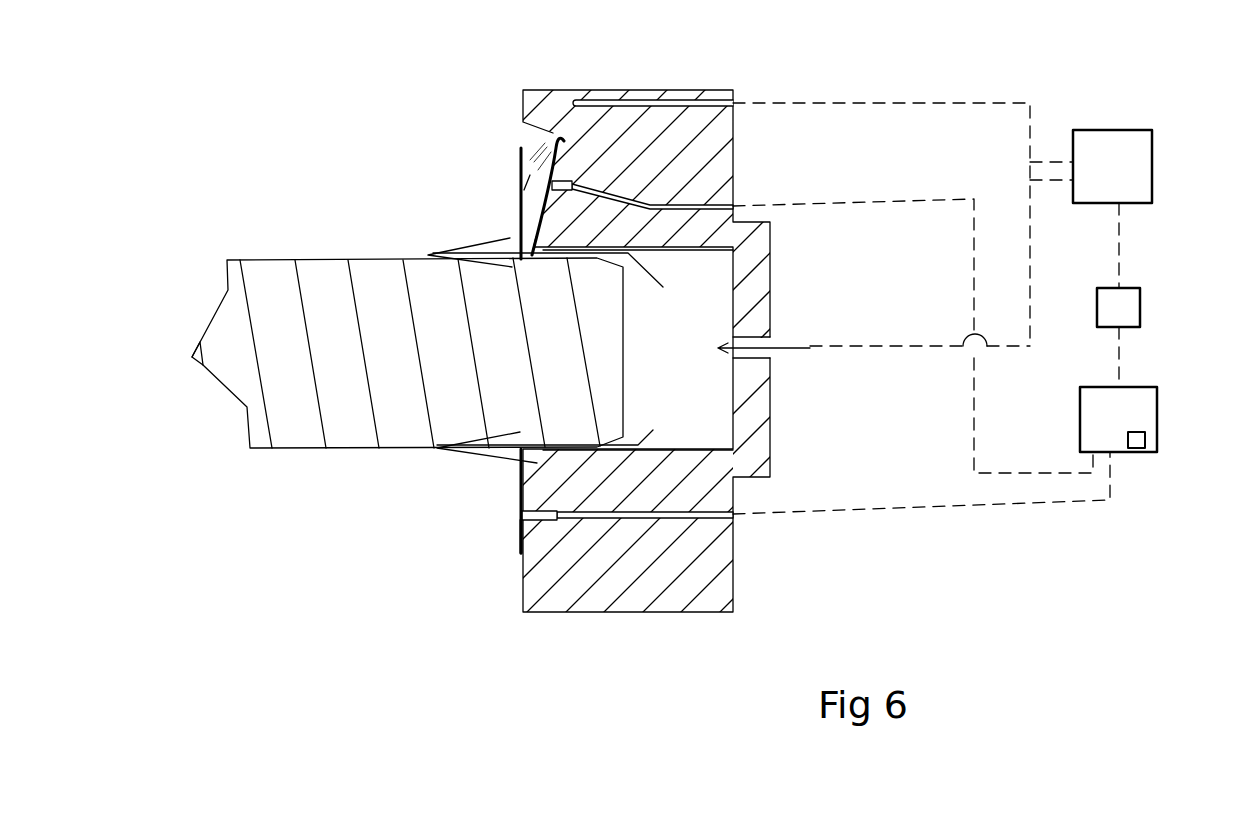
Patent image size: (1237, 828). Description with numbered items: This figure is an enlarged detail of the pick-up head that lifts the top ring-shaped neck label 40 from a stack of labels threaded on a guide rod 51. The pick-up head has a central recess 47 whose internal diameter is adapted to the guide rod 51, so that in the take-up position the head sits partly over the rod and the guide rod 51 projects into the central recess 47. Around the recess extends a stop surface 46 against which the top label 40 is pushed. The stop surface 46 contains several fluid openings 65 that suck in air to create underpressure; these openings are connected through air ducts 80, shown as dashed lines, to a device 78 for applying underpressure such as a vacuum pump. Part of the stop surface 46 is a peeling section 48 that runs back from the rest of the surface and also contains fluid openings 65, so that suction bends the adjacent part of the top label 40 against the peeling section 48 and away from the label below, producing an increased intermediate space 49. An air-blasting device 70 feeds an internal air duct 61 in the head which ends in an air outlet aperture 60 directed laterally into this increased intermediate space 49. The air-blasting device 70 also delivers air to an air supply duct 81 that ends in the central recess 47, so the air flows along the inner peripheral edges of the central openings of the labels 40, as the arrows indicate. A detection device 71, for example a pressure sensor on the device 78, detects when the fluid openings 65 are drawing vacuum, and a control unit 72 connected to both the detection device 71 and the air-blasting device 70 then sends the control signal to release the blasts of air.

The ring-shaped neck label 40 is at (521, 491).
The stop surface 46 is at (511, 539).
The central recess 47 is at (700, 428).
The peeling section 48 is at (538, 224).
The increased intermediate space 49 is at (533, 181).
The guide rod 51 is at (327, 276).
The air outlet aperture 60 is at (554, 134).
The internal air duct 61 is at (647, 106).
The fluid openings 65 is at (561, 180).
The air-blasting device 70 is at (1127, 112).
The detection device 71 is at (1135, 440).
The control unit 72 is at (1125, 310).
The device for applying underpressure 78 is at (1138, 410).
The air ducts 80 is at (683, 207).
The air supply duct 81 is at (755, 352).